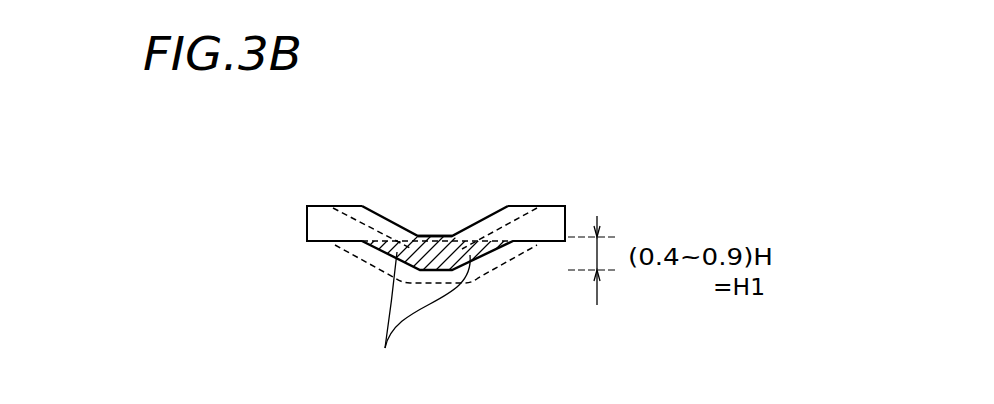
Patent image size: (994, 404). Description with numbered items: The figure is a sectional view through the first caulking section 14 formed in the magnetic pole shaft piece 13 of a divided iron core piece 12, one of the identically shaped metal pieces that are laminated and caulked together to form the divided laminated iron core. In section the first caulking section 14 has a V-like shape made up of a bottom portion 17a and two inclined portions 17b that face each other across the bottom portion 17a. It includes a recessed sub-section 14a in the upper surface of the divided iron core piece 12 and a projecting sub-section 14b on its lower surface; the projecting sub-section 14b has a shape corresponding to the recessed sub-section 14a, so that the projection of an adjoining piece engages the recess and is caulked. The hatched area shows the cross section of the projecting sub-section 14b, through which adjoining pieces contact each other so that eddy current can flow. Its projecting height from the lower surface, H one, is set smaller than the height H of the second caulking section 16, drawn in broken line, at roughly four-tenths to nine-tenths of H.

The divided iron core piece 12 is at (497, 187).
The magnetic pole shaft piece 13 is at (552, 222).
The first caulking section 14 is at (452, 217).
The recessed sub-section 14a is at (428, 236).
The projecting sub-section 14b is at (479, 250).
The second caulking section 16 is at (365, 257).
The bottom portion 17a is at (440, 254).
The inclined portion 17b is at (415, 320).